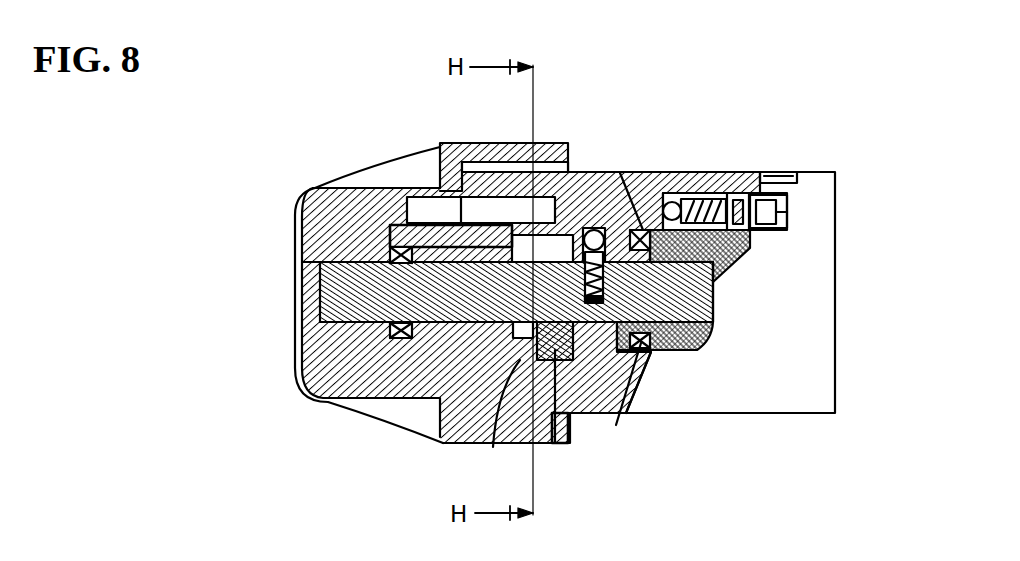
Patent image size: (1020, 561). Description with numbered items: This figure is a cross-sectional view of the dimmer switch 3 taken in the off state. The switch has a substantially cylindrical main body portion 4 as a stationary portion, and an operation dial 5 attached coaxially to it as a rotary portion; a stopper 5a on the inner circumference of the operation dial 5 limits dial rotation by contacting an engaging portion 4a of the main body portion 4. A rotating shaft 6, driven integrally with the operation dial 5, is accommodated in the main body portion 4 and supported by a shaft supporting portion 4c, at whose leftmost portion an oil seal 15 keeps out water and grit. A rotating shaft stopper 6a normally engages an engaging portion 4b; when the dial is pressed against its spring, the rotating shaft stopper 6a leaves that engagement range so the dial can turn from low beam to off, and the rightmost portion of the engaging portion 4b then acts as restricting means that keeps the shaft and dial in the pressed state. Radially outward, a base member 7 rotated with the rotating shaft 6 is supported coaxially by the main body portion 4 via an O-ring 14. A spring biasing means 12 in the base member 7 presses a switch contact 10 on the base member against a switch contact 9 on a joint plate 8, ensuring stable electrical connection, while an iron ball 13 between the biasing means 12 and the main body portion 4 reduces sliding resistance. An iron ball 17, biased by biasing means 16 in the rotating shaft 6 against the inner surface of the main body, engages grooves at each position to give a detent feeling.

The dimmer switch 3 is at (611, 239).
The main body portion 4 is at (531, 274).
The engaging portion 4a is at (554, 428).
The engaging portion 4b is at (654, 403).
The shaft supporting portion 4c is at (458, 167).
The operation dial 5 is at (504, 138).
The stopper 5a is at (496, 424).
The rotating shaft 6 is at (341, 293).
The rotating shaft stopper 6a is at (679, 382).
The base member 7 is at (751, 307).
The joint plate 8 is at (835, 188).
The switch contact 9 is at (771, 168).
The switch contact 10 is at (744, 160).
The biasing means 12 is at (703, 165).
The iron ball 13 is at (669, 149).
The O-ring 14 is at (520, 213).
The oil seal 15 is at (508, 229).
The biasing means 16 is at (792, 292).
The iron ball 17 is at (578, 192).